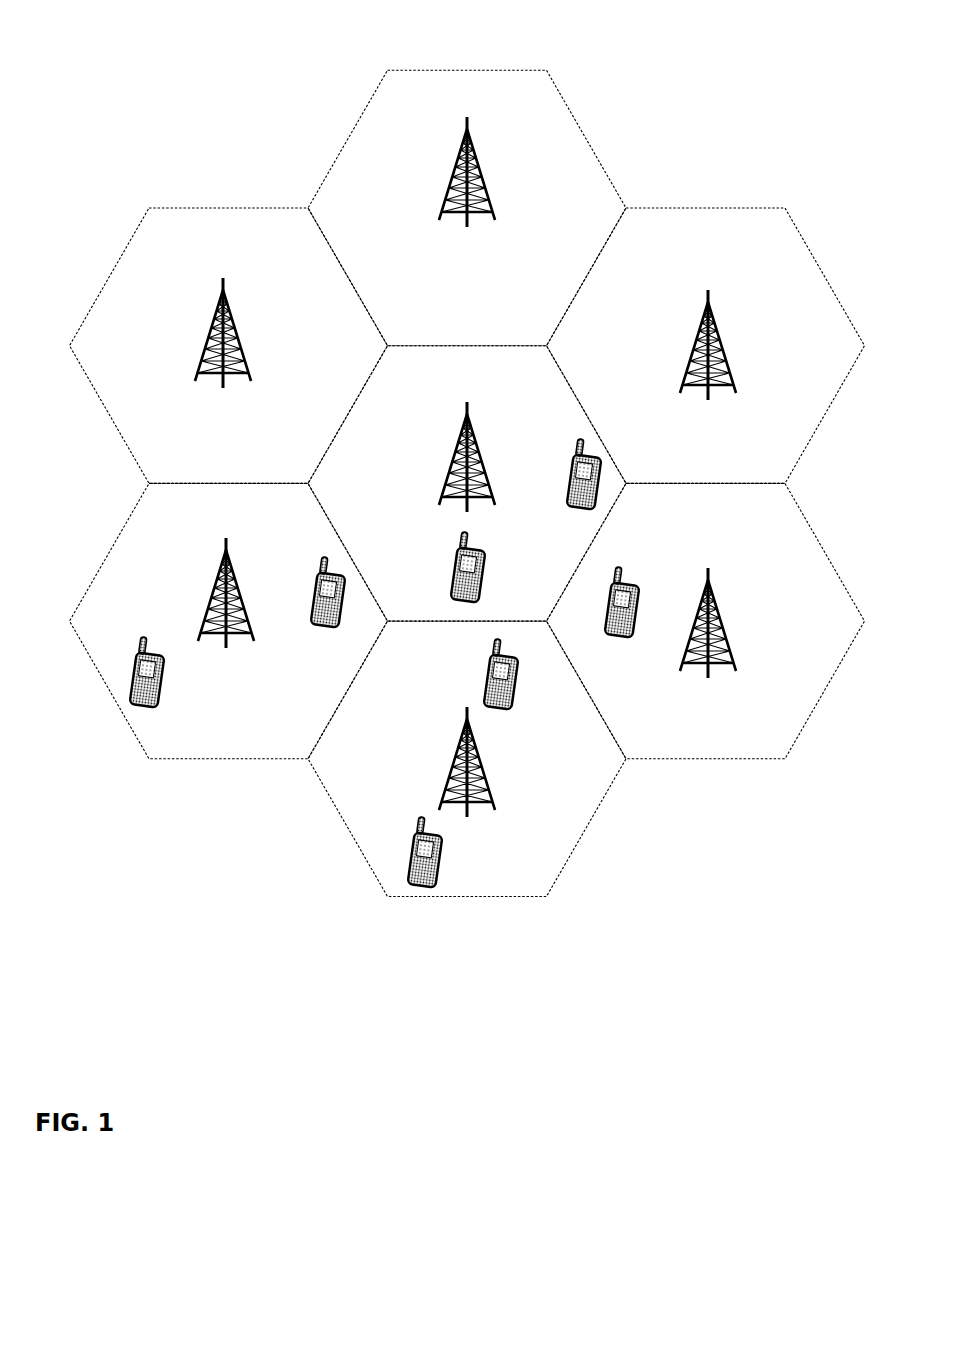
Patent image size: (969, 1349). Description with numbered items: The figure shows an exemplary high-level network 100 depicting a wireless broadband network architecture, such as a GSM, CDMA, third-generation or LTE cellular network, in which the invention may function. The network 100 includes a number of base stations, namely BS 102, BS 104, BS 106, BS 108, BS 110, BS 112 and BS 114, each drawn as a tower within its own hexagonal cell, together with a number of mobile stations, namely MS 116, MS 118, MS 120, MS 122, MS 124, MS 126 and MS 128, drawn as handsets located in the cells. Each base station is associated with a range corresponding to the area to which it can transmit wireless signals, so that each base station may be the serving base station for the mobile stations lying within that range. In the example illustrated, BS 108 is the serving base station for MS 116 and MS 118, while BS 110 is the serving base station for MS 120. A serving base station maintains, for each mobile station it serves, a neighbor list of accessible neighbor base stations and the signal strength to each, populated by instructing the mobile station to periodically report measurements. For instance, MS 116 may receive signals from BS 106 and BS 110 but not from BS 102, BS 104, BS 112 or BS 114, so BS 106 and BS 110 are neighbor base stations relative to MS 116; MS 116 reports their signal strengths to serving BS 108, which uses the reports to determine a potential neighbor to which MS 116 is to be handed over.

The network 100 is at (346, 33).
The base station 102 is at (250, 331).
The base station 104 is at (481, 172).
The base station 106 is at (683, 344).
The base station 108 is at (448, 451).
The base station 110 is at (724, 623).
The base station 112 is at (484, 762).
The base station 114 is at (243, 574).
The mobile station 116 is at (553, 465).
The mobile station 118 is at (498, 552).
The mobile station 120 is at (646, 586).
The mobile station 122 is at (479, 673).
The mobile station 124 is at (405, 836).
The mobile station 126 is at (306, 627).
The mobile station 128 is at (130, 655).